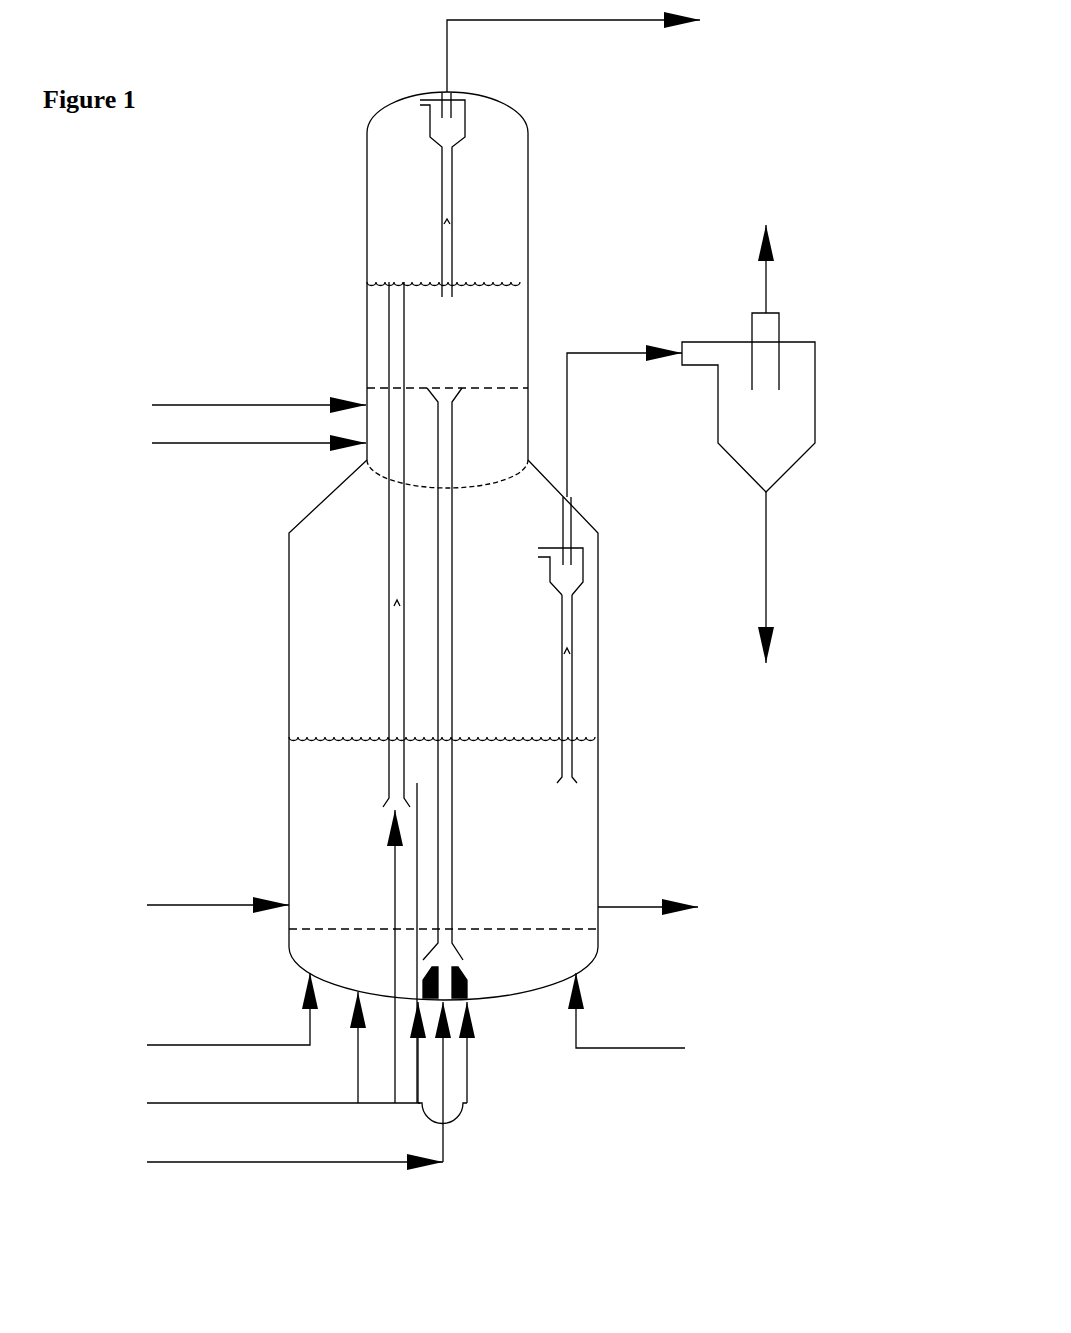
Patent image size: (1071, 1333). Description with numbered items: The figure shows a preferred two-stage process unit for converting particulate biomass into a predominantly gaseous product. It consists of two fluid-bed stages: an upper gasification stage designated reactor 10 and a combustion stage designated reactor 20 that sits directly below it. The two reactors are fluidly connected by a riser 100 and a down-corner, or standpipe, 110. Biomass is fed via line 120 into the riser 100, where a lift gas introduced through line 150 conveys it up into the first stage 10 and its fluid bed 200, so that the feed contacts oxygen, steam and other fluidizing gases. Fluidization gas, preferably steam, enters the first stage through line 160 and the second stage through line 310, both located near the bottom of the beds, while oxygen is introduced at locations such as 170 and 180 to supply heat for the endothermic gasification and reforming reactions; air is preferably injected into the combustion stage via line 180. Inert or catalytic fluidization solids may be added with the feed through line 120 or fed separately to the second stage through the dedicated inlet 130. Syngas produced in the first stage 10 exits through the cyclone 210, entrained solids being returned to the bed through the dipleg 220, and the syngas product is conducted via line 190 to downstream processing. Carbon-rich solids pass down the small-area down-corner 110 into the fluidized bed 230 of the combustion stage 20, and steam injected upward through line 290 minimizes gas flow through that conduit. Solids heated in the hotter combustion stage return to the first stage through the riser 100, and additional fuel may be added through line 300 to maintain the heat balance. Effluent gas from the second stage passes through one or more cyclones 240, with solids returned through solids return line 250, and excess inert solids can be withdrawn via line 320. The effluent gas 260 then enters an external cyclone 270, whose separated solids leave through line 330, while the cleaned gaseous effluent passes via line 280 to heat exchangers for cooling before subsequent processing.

The first stage reactor 10 is at (366, 297).
The second stage reactor 20 is at (289, 733).
The riser 100 is at (461, 693).
The down-corner 110 is at (377, 544).
The feed line 120 is at (262, 1163).
The inlet 130 is at (185, 906).
The lift gas line 150 is at (443, 1167).
The fluidization gas line 160 is at (226, 444).
The oxygen inlet 170 is at (226, 406).
The oxygen-containing gas line 180 is at (660, 1018).
The syngas product line 190 is at (599, 49).
The fluid bed 200 is at (469, 343).
The cyclone 210 is at (469, 195).
The dipleg 220 is at (415, 208).
The fluidized bed 230 is at (525, 821).
The cyclone 240 is at (545, 546).
The solids return line 250 is at (542, 689).
The effluent gas 260 is at (624, 407).
The cyclone 270 is at (778, 402).
The gaseous effluent line 280 is at (767, 252).
The steam injection line 290 is at (381, 943).
The fuel line 300 is at (197, 1016).
The fluidization gas line 310 is at (251, 1055).
The solids removal line 320 is at (681, 908).
The solids line 330 is at (765, 597).